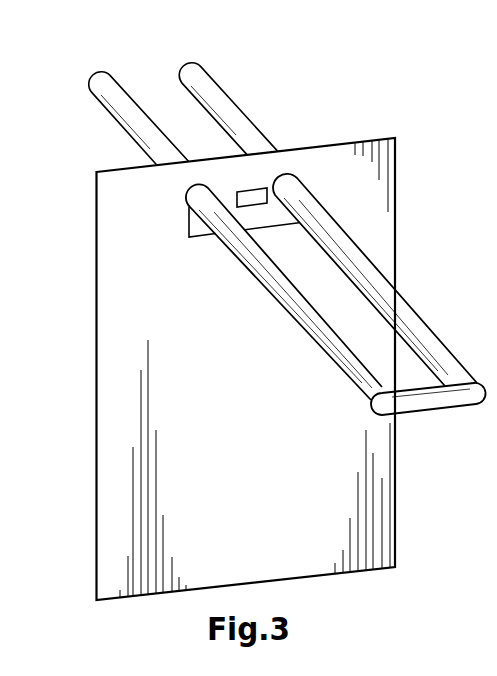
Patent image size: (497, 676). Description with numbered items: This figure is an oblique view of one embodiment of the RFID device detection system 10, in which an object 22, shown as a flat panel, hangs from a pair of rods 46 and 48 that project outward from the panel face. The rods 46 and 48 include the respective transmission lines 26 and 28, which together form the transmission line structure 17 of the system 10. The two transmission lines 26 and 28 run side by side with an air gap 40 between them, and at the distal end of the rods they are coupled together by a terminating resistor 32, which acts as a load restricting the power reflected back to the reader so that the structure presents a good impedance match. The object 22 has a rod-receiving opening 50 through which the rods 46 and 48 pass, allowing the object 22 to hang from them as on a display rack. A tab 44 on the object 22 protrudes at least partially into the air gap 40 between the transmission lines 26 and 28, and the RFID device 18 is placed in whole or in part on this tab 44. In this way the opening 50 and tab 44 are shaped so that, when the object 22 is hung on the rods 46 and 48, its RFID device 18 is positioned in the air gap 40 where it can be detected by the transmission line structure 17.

The RFID device detection system 10 is at (54, 73).
The transmission line structure 17 is at (137, 53).
The object 22 is at (107, 236).
The transmission line 26 is at (118, 107).
The transmission line 28 is at (205, 75).
The air gap 40 is at (203, 120).
The RFID device 18 is at (251, 190).
The tab 44 is at (277, 188).
The rod-receiving opening 50 is at (187, 248).
The rod 46 is at (313, 343).
The rod 48 is at (433, 350).
The terminating resistor 32 is at (443, 400).